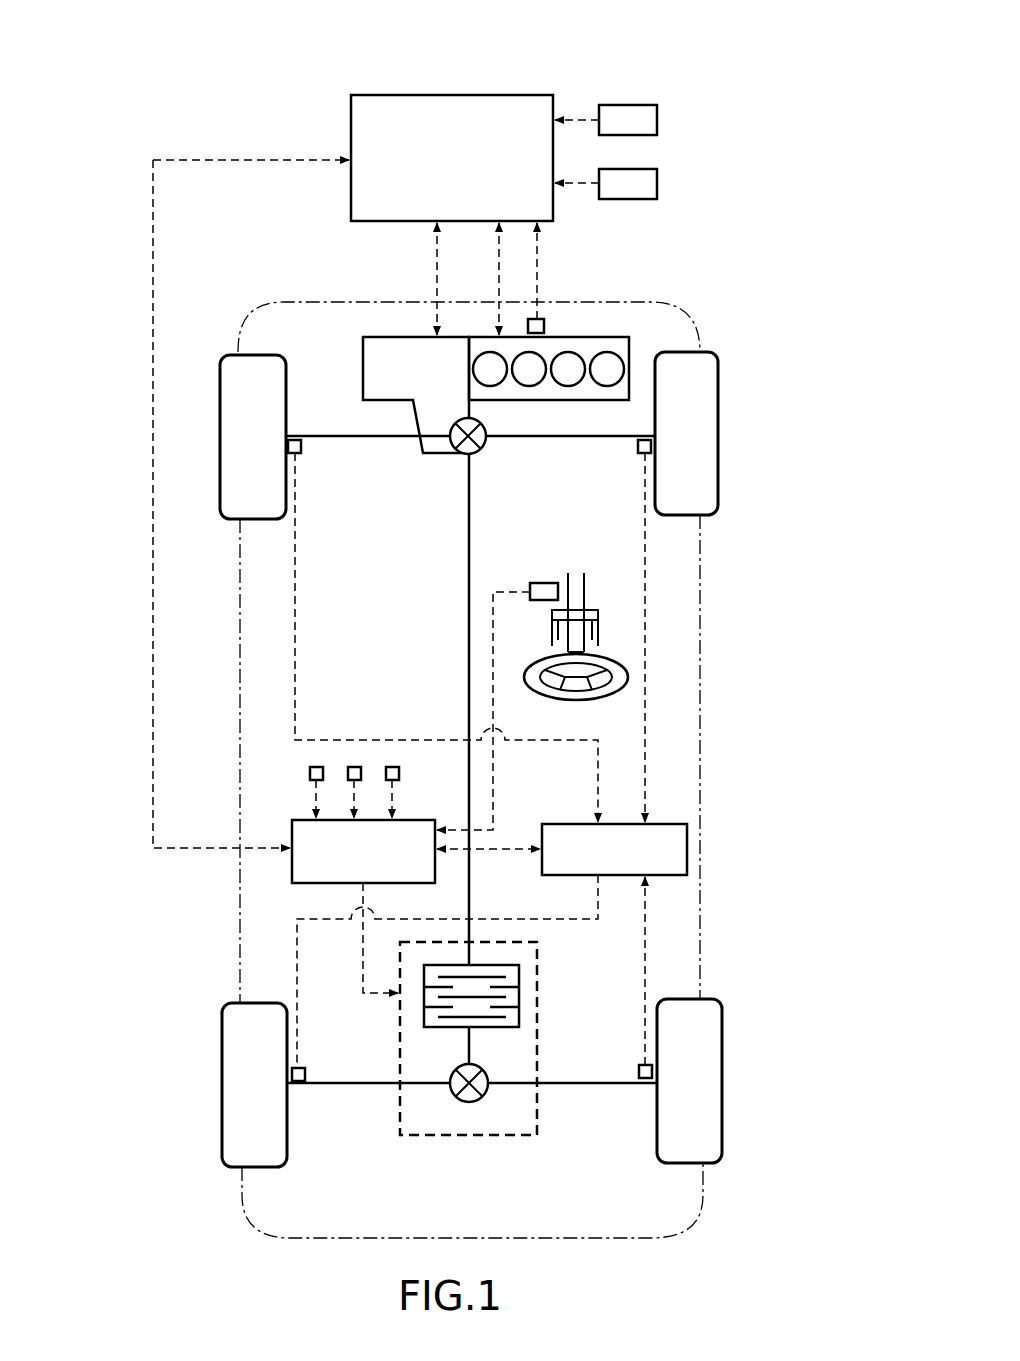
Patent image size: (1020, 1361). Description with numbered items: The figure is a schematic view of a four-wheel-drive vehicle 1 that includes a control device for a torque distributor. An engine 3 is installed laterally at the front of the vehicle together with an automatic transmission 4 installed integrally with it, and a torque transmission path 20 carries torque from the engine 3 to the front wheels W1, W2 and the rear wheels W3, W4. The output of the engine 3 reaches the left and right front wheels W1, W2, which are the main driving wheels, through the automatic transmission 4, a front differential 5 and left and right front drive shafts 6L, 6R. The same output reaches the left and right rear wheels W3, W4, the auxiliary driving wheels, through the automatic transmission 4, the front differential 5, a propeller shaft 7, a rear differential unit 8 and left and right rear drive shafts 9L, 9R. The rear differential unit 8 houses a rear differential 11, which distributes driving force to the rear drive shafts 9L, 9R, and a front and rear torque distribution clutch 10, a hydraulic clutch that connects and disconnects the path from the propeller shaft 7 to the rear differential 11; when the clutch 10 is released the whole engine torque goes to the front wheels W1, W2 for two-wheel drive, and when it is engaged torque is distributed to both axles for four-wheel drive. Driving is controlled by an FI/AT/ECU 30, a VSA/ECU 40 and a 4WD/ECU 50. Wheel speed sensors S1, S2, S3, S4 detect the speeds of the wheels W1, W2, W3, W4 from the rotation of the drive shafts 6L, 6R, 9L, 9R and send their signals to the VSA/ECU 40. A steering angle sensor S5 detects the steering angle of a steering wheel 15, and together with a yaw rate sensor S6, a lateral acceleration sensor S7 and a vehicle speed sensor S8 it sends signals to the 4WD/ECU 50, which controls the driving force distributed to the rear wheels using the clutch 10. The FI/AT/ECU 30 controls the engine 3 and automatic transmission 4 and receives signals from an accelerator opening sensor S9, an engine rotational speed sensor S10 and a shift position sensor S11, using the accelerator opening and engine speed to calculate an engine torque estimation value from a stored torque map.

The four-wheel-drive vehicle 1 is at (714, 300).
The engine 3 is at (612, 337).
The automatic transmission 4 is at (386, 337).
The front differential 5 is at (484, 451).
The left front drive shaft 6L is at (386, 437).
The right front drive shaft 6R is at (580, 437).
The propeller shaft 7 is at (476, 722).
The rear differential unit 8 is at (398, 955).
The left rear drive shaft 9L is at (380, 1084).
The right rear drive shaft 9R is at (575, 1084).
The front and rear torque distribution clutch 10 is at (522, 993).
The rear differential 11 is at (475, 1106).
The steering wheel 15 is at (630, 659).
The torque transmission path 20 is at (382, 640).
The FI/AT/ECU 30 is at (485, 94).
The VSA/ECU 40 is at (670, 823).
The 4WD/ECU 50 is at (290, 829).
The left front wheel speed sensor S1 is at (296, 454).
The right front wheel speed sensor S2 is at (645, 454).
The left rear wheel speed sensor S3 is at (298, 1082).
The right rear wheel speed sensor S4 is at (645, 1079).
The steering angle sensor S5 is at (541, 601).
The yaw rate sensor S6 is at (392, 767).
The lateral acceleration sensor S7 is at (354, 767).
The vehicle speed sensor S8 is at (316, 767).
The accelerator opening sensor S9 is at (658, 119).
The engine rotational speed sensor S10 is at (546, 319).
The shift position sensor S11 is at (658, 183).
The left front wheel W1 is at (240, 355).
The right front wheel W2 is at (700, 352).
The left rear wheel W3 is at (242, 1003).
The right rear wheel W4 is at (703, 999).